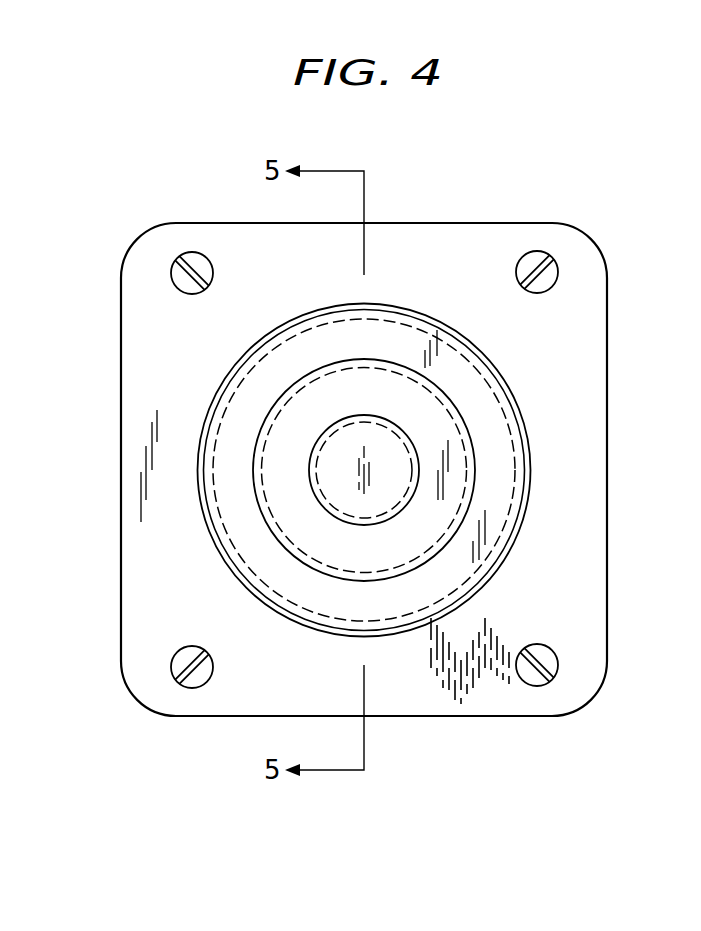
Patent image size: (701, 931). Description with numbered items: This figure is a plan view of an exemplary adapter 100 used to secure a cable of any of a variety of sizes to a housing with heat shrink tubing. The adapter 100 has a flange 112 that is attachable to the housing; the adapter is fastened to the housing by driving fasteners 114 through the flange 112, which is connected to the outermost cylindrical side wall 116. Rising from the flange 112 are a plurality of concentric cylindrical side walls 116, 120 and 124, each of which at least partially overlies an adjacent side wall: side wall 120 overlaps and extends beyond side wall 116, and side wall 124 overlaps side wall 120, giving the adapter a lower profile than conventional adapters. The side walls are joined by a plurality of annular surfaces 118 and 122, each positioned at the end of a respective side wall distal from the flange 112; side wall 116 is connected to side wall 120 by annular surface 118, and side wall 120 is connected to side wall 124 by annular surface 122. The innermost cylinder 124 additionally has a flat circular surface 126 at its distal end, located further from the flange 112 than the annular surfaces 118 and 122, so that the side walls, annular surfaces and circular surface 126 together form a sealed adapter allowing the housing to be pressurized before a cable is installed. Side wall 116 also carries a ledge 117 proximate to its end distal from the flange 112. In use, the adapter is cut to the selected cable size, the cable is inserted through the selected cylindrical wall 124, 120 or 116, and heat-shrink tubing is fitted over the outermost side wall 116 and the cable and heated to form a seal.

The adapter 100 is at (406, 423).
The flange 112 is at (606, 343).
The fasteners 114 is at (515, 267).
The outermost cylindrical side wall 116 is at (362, 634).
The ledge 117 is at (276, 606).
The annular surface 118 is at (497, 481).
The cylindrical side wall 120 is at (457, 400).
The annular surface 122 is at (398, 395).
The innermost cylindrical side wall 124 is at (363, 408).
The flat circular surface 126 is at (343, 460).